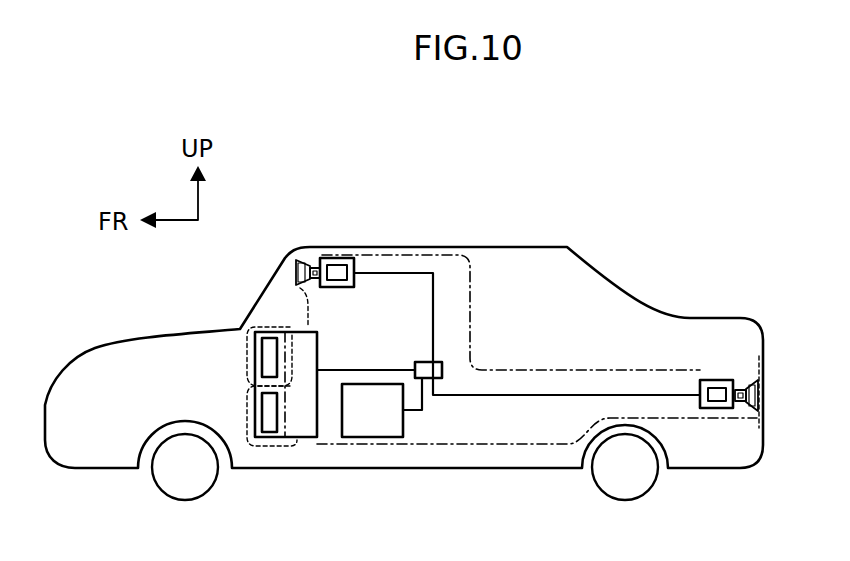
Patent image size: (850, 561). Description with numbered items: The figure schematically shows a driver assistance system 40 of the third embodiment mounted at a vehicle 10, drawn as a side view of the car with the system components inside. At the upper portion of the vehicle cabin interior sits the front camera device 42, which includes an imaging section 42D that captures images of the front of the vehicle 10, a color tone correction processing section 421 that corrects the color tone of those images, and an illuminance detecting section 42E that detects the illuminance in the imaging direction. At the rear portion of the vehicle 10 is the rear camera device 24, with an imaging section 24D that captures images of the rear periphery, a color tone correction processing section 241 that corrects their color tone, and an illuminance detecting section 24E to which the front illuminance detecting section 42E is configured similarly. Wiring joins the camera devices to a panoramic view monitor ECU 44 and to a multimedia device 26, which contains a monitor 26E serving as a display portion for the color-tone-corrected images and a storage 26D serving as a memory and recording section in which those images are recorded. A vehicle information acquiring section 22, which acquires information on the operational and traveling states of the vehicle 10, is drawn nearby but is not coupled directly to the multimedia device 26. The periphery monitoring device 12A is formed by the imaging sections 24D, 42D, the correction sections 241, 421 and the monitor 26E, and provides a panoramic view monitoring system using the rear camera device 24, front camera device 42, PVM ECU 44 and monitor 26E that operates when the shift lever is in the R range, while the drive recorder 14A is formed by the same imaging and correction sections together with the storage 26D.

The vehicle 10 is at (404, 311).
The driver assistance system 40 is at (628, 326).
The periphery monitoring device 12A is at (240, 357).
The drive recorder 14A is at (240, 403).
The vehicle information acquiring section 22 is at (368, 440).
The rear camera device 24 is at (765, 374).
The color tone correction processing section 241 is at (716, 409).
The imaging section 24D is at (753, 376).
The illuminance detecting section 24E is at (744, 402).
The multimedia device 26 is at (221, 394).
The storage 26D is at (274, 440).
The monitor 26E is at (270, 327).
The front camera device 42 is at (318, 256).
The color tone correction processing section 421 is at (337, 288).
The imaging section 42D is at (297, 259).
The illuminance detecting section 42E is at (318, 266).
The panoramic view monitor ECU 44 is at (425, 360).